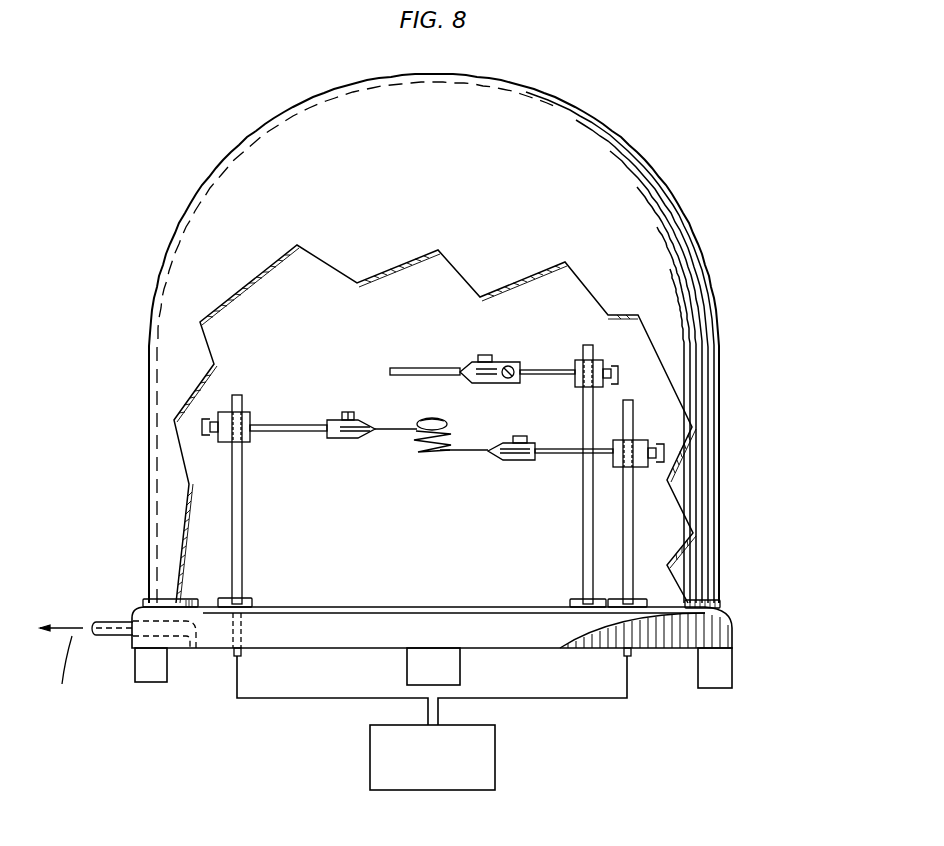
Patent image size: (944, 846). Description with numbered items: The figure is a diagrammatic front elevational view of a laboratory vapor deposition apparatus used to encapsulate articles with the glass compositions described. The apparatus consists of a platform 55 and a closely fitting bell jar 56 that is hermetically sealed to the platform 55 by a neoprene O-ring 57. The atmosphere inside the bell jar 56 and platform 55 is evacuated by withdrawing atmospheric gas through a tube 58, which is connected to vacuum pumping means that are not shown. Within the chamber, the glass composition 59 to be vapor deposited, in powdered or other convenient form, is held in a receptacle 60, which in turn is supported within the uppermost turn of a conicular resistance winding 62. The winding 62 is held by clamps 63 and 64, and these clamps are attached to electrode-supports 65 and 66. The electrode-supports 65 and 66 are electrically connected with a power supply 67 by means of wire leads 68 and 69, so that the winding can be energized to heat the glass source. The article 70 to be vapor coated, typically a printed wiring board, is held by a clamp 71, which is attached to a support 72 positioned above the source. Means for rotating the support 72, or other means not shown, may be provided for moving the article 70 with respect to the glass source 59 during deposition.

The platform 55 is at (730, 632).
The bell jar 56 is at (694, 259).
The neoprene O-ring 57 is at (716, 609).
The tube 58 is at (110, 634).
The glass composition 59 is at (441, 418).
The receptacle 60 is at (450, 428).
The conicular resistance winding 62 is at (437, 454).
The clamp 63 is at (338, 420).
The clamp 64 is at (538, 444).
The electrode-support 65 is at (244, 528).
The electrode-support 66 is at (630, 536).
The power supply 67 is at (441, 791).
The wire lead 68 is at (272, 702).
The wire lead 69 is at (560, 701).
The article 70 is at (408, 367).
The clamp 71 is at (506, 362).
The support 72 is at (583, 528).